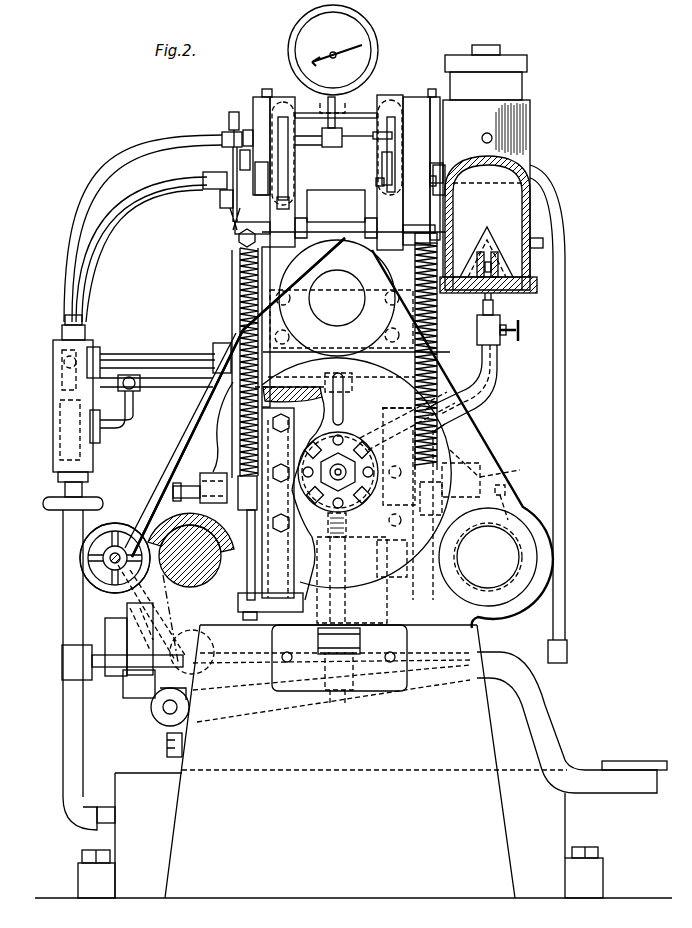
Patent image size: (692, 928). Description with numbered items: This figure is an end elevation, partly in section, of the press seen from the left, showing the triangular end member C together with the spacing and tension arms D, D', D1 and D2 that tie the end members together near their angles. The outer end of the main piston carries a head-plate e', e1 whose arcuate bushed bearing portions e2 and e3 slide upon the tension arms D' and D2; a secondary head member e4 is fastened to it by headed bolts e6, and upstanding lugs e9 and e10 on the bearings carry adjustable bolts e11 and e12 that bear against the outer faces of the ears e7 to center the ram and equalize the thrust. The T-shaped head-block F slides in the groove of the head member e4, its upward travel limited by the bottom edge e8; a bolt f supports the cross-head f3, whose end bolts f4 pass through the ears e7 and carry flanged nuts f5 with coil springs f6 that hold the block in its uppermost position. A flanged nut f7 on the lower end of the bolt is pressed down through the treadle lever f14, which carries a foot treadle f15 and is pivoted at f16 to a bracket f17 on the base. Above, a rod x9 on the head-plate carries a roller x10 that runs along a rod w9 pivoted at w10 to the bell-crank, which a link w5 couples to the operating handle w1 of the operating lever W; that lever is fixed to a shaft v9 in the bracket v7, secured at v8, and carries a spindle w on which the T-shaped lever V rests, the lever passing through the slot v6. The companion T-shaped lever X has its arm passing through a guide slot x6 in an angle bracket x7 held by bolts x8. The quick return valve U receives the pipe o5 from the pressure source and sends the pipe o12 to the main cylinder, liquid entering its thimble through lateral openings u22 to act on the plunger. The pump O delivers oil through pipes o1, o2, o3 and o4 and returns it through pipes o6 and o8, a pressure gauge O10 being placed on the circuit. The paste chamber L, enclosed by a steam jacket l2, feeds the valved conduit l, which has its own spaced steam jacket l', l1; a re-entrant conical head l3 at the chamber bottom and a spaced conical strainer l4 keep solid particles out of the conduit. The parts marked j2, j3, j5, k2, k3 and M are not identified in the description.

The pressure gauge O10 is at (333, 76).
The shaft v9 is at (262, 97).
The pivotal connection w10 is at (230, 120).
The oil delivery pipe o3 is at (166, 128).
The rod w9 is at (238, 157).
The oil delivery pipe o2 is at (138, 168).
The roller x10 is at (218, 208).
The oil return pipe o8 is at (144, 214).
The flanged nuts f5 is at (236, 238).
The rod x9 is at (238, 275).
The coil springs f6 is at (238, 290).
The T-shaped lever X is at (278, 197).
The guide slot x6 is at (282, 200).
The slot v6 is at (373, 138).
The T-shaped lever V is at (382, 160).
The operating lever W is at (433, 142).
The spindle w is at (376, 182).
The link w5 is at (336, 206).
The end member C is at (340, 242).
The angle bracket x7 is at (265, 252).
The angular bracket member v7 is at (406, 172).
The paste chamber L is at (530, 118).
The steam jacket l2 is at (530, 188).
The conical strainer l4 is at (498, 250).
The conical head l3 is at (498, 262).
The operating handle w1 is at (440, 280).
The valved conduit l is at (477, 362).
The steam jacket l' is at (465, 411).
The steam jacket l1 is at (435, 417).
The oil return pipe o6 is at (560, 412).
The spacing and tension arm D is at (356, 298).
The bolts x8 is at (283, 306).
The securing point v8 is at (385, 318).
The quick return valve U is at (53, 361).
The pipe o12 is at (158, 340).
The pipe o5 is at (124, 400).
The oil delivery pipe o1 is at (162, 386).
The head-plate e' is at (235, 397).
The head-plate e1 is at (238, 397).
The upstanding lug e9 is at (216, 436).
The adjustable bolt e11 is at (200, 484).
The headed bolts e6 is at (281, 464).
The secondary head member e4 is at (277, 506).
The oil delivery pipe o4 is at (345, 390).
The shaft nut k3 is at (345, 458).
The ratchet wheel j3 is at (364, 443).
The pin j5 is at (378, 465).
The cam disk M is at (353, 479).
The slide block k2 is at (352, 511).
The T-shaped head-block F is at (352, 581).
The lever j2 is at (310, 518).
The bottom edge e8 is at (276, 593).
The arcuate bushed bearing portion e2 is at (218, 570).
The ears e7 is at (452, 452).
The upstanding lug e10 is at (468, 471).
The adjustable bolt e12 is at (510, 488).
The arcuate bushed bearing portion e3 is at (500, 525).
The spacing and tension arm D' is at (132, 577).
The spacing and tension arm D1 is at (115, 558).
The lateral openings u22 is at (57, 502).
The spacing and tension arm D2 is at (488, 557).
The variable delivery liquid pressure pump O is at (138, 670).
The vertically extending bolts f4 is at (240, 625).
The cross-head f3 is at (338, 634).
The bolt f is at (339, 658).
The flanged nut f7 is at (350, 692).
The pivotal mounting f16 is at (160, 712).
The bracket f17 is at (167, 745).
The treadle lever f14 is at (548, 712).
The foot treadle f15 is at (628, 748).